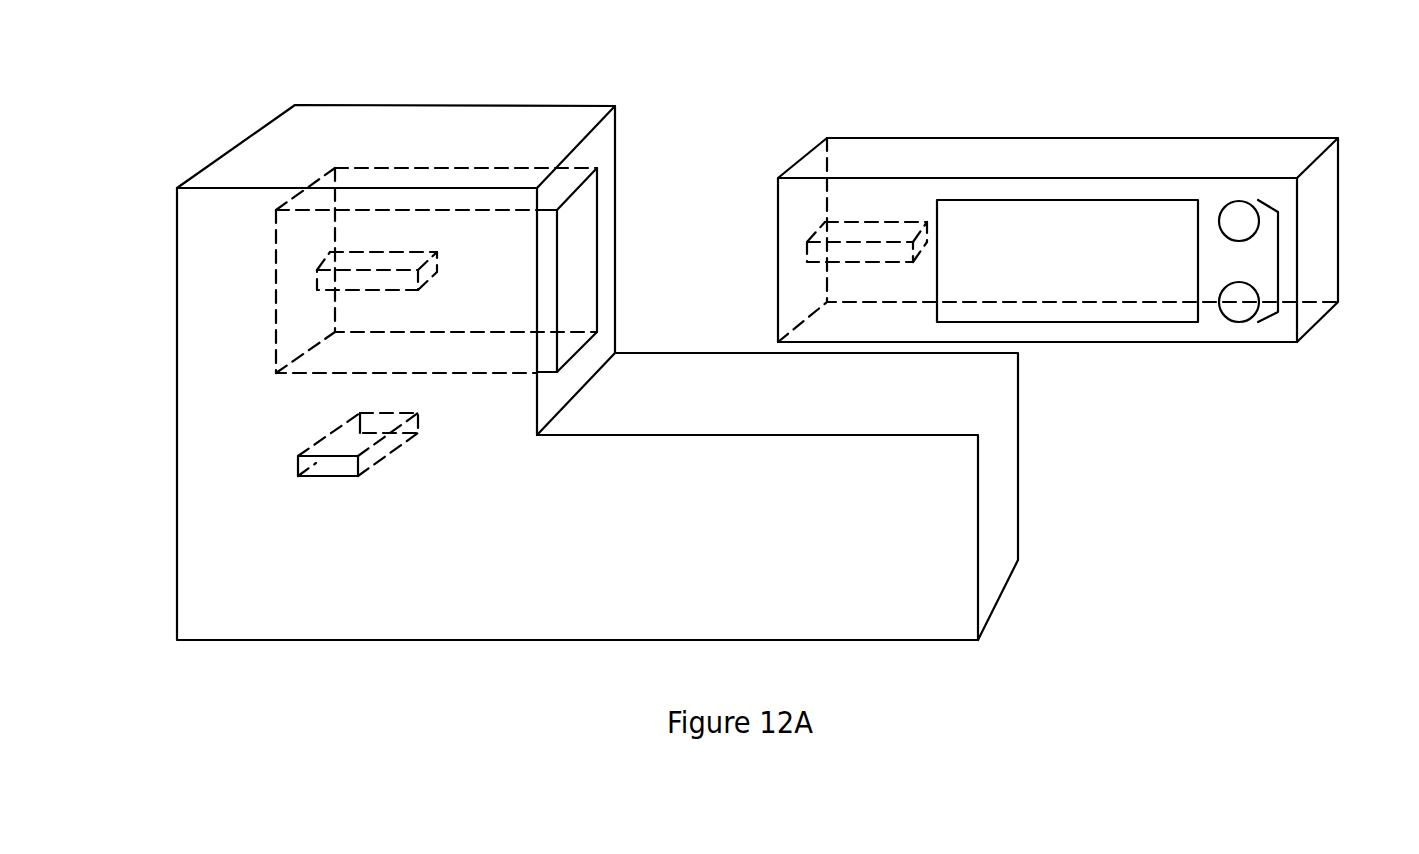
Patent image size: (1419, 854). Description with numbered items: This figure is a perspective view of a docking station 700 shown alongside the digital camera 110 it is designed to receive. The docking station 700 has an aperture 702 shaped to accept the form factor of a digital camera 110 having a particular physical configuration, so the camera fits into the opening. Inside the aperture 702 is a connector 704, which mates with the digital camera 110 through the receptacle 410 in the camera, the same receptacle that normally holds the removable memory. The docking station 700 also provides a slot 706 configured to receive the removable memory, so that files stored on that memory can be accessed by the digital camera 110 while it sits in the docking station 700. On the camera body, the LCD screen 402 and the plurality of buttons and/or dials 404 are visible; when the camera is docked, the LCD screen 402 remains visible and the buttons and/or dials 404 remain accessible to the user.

The docking station 700 is at (455, 105).
The aperture 702 is at (577, 210).
The connector 704 is at (360, 260).
The slot 706 is at (298, 456).
The digital camera 110 is at (1257, 138).
The LCD screen 402 is at (957, 200).
The plurality of buttons and/or dials 404 is at (1278, 260).
The receptacle 410 is at (808, 247).